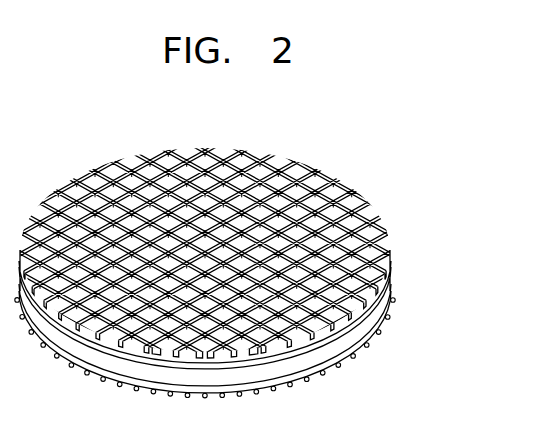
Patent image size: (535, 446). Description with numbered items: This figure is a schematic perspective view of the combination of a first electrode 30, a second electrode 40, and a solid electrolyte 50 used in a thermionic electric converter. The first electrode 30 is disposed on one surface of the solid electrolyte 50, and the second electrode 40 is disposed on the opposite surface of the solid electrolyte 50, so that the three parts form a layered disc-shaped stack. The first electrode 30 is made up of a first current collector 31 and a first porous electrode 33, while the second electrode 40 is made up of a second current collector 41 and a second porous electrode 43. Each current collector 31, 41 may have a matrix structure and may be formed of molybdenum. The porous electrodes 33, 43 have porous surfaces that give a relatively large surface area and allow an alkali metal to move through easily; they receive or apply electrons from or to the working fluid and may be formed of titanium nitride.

The first electrode 30 is at (248, 223).
The first current collector 31 is at (382, 252).
The first porous electrode 33 is at (391, 292).
The second electrode 40 is at (256, 344).
The second current collector 41 is at (367, 345).
The second porous electrode 43 is at (373, 333).
The solid electrolyte 50 is at (377, 308).